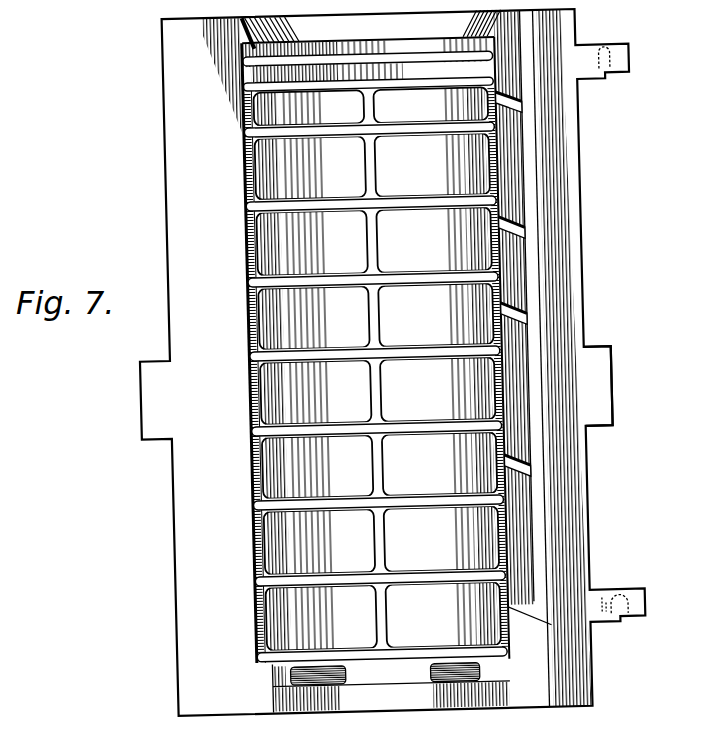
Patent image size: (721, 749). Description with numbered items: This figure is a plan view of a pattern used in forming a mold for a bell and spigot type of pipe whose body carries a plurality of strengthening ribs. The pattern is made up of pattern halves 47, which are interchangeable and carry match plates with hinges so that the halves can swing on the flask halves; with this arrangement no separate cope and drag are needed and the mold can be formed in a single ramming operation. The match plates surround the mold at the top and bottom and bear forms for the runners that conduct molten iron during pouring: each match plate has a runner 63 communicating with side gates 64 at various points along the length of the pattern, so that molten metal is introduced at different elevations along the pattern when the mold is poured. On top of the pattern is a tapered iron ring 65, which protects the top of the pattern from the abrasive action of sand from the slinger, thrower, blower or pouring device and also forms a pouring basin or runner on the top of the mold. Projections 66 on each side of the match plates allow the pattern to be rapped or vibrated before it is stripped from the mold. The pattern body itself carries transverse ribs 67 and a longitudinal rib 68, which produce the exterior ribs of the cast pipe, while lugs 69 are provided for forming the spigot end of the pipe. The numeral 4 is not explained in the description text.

The cabinet side wall 4 is at (523, 97).
The pattern halves 47 is at (497, 27).
The runner 63 is at (533, 30).
The side gates 64 is at (528, 223).
The tapered iron ring 65 is at (248, 52).
The projections 66 is at (596, 388).
The transverse ribs 67 is at (423, 352).
The longitudinal rib 68 is at (376, 324).
The lugs 69 is at (331, 686).